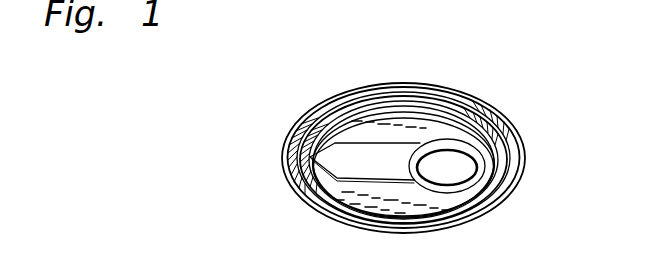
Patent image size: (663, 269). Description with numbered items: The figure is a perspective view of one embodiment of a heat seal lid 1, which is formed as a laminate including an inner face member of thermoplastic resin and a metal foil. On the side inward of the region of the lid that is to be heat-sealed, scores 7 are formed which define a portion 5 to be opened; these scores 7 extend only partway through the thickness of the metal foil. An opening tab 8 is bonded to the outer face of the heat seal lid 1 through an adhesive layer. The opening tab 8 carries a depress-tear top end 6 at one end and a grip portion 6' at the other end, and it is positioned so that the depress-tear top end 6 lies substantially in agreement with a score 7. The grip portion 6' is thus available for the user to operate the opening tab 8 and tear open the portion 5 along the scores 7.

The heat seal lid 1 is at (477, 84).
The portion to be opened 5 is at (352, 130).
The depress-tear top end 6 is at (332, 185).
The grip portion 6' is at (490, 154).
The scores 7 is at (330, 128).
The opening tab 8 is at (382, 150).